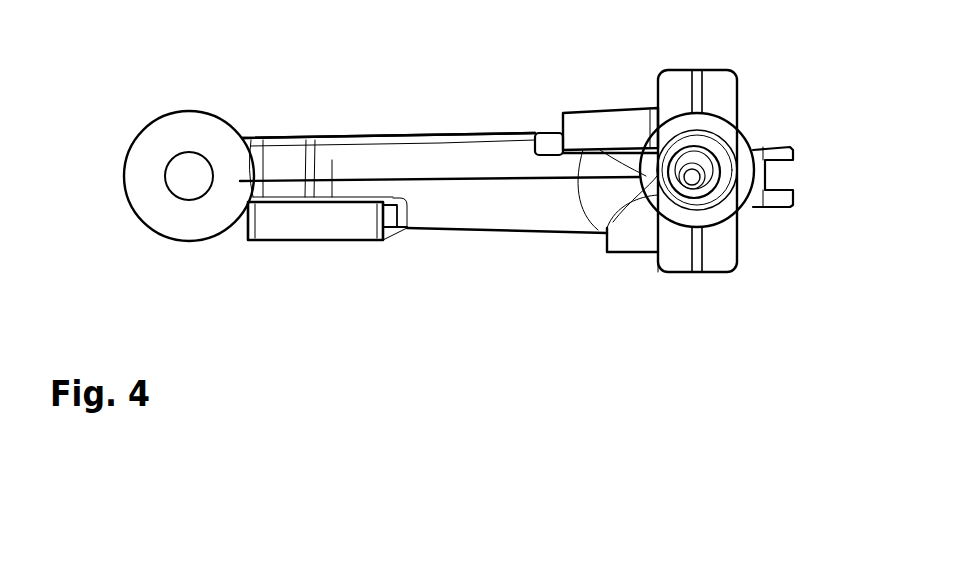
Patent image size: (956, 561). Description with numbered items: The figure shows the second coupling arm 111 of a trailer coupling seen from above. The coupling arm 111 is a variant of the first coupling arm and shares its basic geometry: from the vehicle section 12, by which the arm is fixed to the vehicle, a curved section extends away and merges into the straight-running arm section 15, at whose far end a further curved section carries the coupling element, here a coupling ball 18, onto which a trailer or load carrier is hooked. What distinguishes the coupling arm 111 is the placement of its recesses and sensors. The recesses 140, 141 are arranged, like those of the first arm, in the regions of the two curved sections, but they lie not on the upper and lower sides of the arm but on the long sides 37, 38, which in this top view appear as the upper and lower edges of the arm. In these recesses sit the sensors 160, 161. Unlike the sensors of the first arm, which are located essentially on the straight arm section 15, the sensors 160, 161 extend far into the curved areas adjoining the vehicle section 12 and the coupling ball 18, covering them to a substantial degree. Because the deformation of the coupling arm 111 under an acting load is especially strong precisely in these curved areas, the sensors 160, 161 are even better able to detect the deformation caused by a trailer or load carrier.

The vehicle section 12 is at (733, 150).
The arm section 15 is at (444, 147).
The coupling ball 18 is at (217, 137).
The long side 37 is at (368, 137).
The long side 38 is at (483, 234).
The coupling arm 111 is at (736, 279).
The recess 140 is at (394, 212).
The recess 141 is at (553, 143).
The sensor 160 is at (303, 233).
The sensor 161 is at (587, 122).